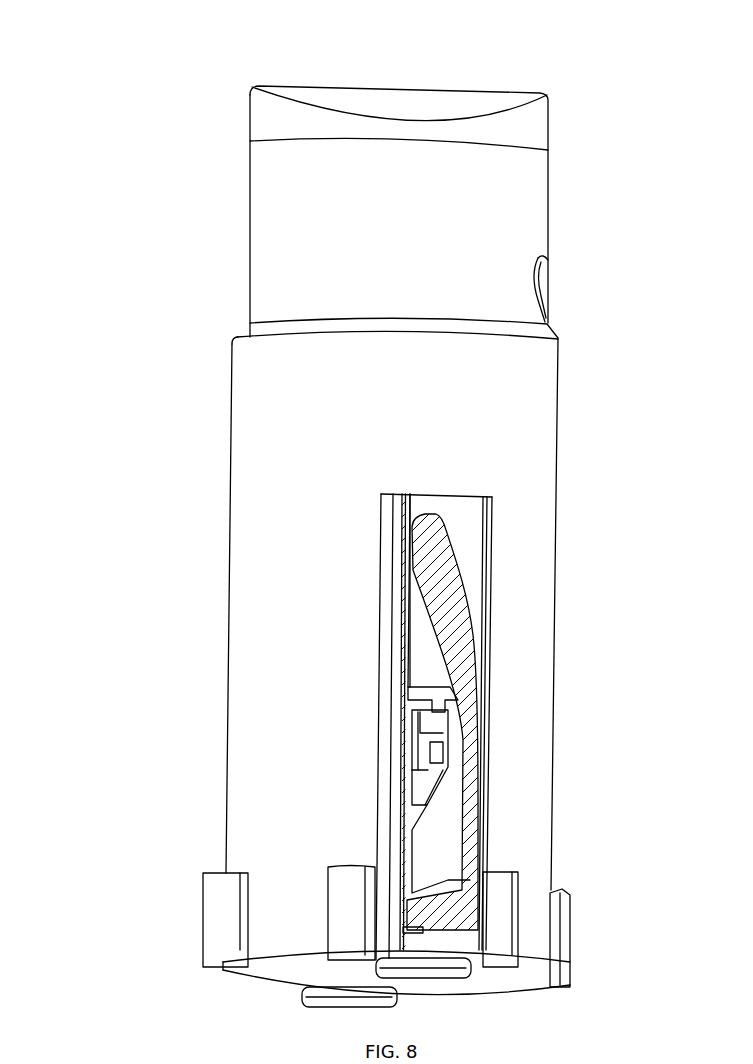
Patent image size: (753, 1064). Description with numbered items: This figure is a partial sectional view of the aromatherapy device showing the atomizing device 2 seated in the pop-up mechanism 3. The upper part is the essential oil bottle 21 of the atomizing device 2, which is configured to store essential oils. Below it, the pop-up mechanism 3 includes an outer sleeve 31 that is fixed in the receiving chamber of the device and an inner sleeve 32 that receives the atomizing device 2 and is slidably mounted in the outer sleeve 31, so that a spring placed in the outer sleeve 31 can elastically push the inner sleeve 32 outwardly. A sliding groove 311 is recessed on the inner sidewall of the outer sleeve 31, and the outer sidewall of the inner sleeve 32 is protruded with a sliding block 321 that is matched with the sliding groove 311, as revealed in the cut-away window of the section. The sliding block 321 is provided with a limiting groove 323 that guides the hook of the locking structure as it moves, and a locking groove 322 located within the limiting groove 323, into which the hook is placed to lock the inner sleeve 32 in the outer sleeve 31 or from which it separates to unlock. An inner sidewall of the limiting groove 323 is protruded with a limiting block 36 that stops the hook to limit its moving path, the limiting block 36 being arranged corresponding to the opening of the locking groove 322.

The atomizing device 2 is at (236, 264).
The essential oil bottle 21 is at (308, 200).
The inner sleeve 32 is at (247, 328).
The pop-up mechanism 3 is at (203, 688).
The outer sleeve 31 is at (265, 512).
The sliding groove 311 is at (420, 655).
The sliding block 321 is at (445, 668).
The limiting block 36 is at (440, 695).
The locking groove 322 is at (438, 706).
The limiting groove 323 is at (443, 828).